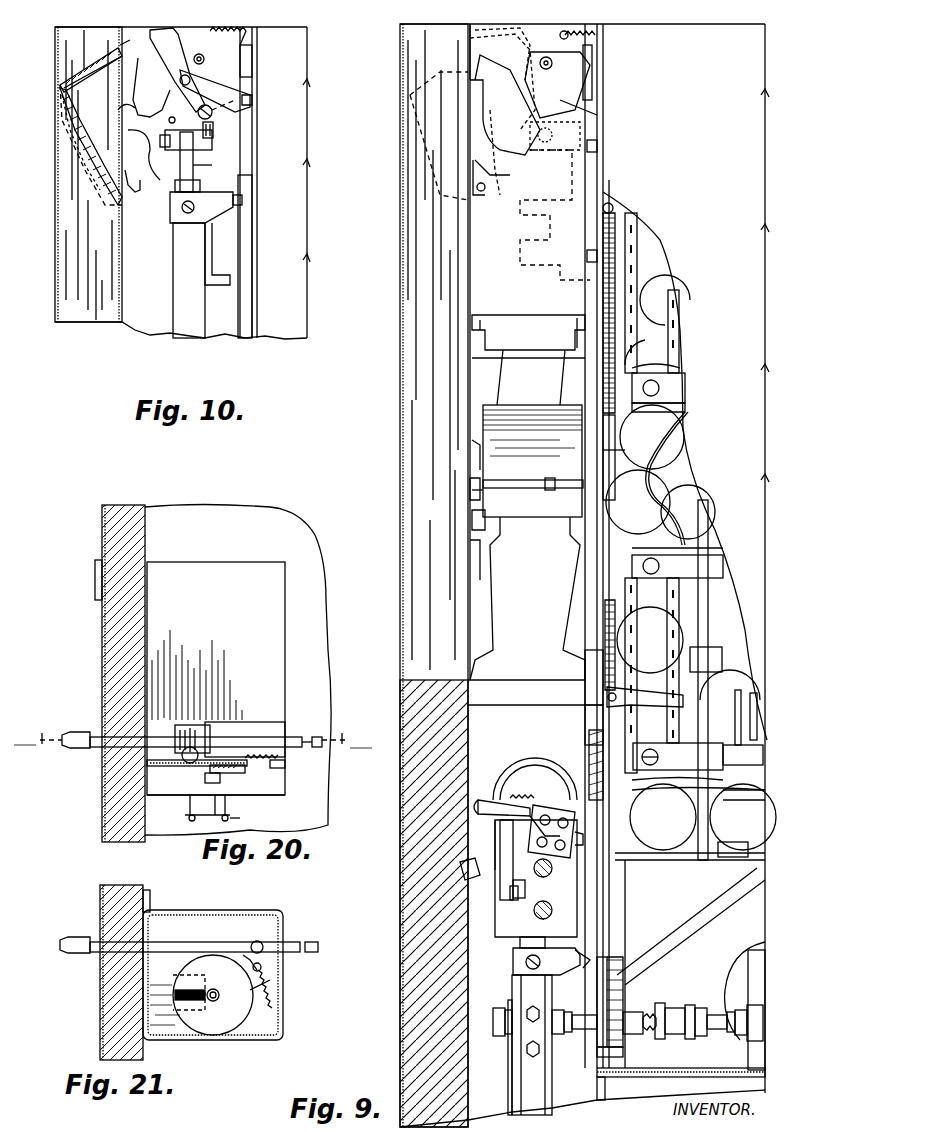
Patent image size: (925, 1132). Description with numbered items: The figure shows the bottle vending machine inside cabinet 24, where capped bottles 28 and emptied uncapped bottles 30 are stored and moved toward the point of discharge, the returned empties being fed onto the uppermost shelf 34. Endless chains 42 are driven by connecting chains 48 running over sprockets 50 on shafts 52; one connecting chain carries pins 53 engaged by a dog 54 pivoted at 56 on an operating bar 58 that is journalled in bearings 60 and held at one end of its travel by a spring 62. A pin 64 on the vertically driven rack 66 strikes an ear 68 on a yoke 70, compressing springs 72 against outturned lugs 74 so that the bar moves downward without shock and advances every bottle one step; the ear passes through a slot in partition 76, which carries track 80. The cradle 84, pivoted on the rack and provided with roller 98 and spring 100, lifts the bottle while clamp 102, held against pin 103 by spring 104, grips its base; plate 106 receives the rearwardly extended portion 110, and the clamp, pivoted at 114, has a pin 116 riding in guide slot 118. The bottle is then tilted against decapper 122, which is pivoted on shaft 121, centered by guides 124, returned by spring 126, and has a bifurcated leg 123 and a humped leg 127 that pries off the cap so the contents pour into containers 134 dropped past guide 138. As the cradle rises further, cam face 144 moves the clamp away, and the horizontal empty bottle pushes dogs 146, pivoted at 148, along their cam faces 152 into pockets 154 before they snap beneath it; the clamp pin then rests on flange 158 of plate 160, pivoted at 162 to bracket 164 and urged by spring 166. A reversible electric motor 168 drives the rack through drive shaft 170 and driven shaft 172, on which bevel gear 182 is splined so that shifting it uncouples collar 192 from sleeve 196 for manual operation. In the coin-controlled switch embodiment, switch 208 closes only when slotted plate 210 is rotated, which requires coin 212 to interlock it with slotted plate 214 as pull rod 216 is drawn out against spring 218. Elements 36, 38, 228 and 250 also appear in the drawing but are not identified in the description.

In FIG. 10, the cabinet 24 is at (55, 263).
In FIG. 20, the cabinet 24 is at (102, 658).
In FIG. 21, the cabinet 24 is at (100, 1012).
In FIG. 9, the cabinet 24 is at (766, 155).
In FIG. 9, the capped bottle 28 is at (515, 770).
In FIG. 9, the uncapped bottle 30 is at (468, 72).
In FIG. 9, the uppermost shelf 34 is at (723, 758).
In FIG. 9, the roller 36 is at (718, 820).
In FIG. 9, the brace 38 is at (640, 863).
In FIG. 9, the endless chains 42 is at (750, 790).
In FIG. 9, the connecting chains 48 is at (640, 252).
In FIG. 9, the sprockets 50 is at (672, 365).
In FIG. 9, the shafts 52 is at (678, 756).
In FIG. 9, the pins 53 is at (695, 630).
In FIG. 9, the dog 54 is at (600, 710).
In FIG. 9, the pivot 56 is at (603, 678).
In FIG. 9, the operating bar 58 is at (600, 744).
In FIG. 9, the bearings 60 is at (612, 450).
In FIG. 9, the spring 62 is at (617, 222).
In FIG. 10, the pin 64 is at (243, 203).
In FIG. 9, the pin 64 is at (575, 970).
In FIG. 10, the rack 66 is at (180, 282).
In FIG. 9, the rack 66 is at (520, 985).
In FIG. 9, the ear 68 is at (622, 985).
In FIG. 9, the yoke 70 is at (618, 1050).
In FIG. 9, the springs 72 is at (623, 992).
In FIG. 9, the outturned lugs 74 is at (612, 1068).
In FIG. 9, the partition 76 is at (610, 882).
In FIG. 10, the track 80 is at (245, 267).
In FIG. 9, the track 80 is at (592, 198).
In FIG. 10, the cradle 84 is at (140, 112).
In FIG. 9, the cradle 84 is at (460, 870).
In FIG. 10, the roller 98 is at (180, 170).
In FIG. 9, the roller 98 is at (525, 890).
In FIG. 10, the spring 100 is at (200, 155).
In FIG. 10, the clamp 102 is at (140, 48).
In FIG. 9, the clamp 102 is at (502, 82).
In FIG. 10, the pin 103 is at (120, 128).
In FIG. 9, the spring 104 is at (542, 822).
In FIG. 10, the plate 106 is at (150, 155).
In FIG. 9, the plate 106 is at (497, 838).
In FIG. 9, the rearwardly extended portion 110 is at (510, 890).
In FIG. 10, the pivot 114 is at (118, 56).
In FIG. 9, the pivot 114 is at (495, 816).
In FIG. 10, the pin 116 is at (213, 132).
In FIG. 9, the pin 116 is at (575, 838).
In FIG. 9, the guide slot 118 is at (557, 884).
In FIG. 9, the shaft 121 is at (535, 480).
In FIG. 9, the decapper 122 is at (532, 461).
In FIG. 9, the leg 123 is at (565, 525).
In FIG. 9, the guides 124 is at (558, 594).
In FIG. 9, the spring 126 is at (478, 490).
In FIG. 9, the leg 127 is at (552, 480).
In FIG. 9, the containers 134 is at (520, 330).
In FIG. 9, the guide 138 is at (506, 378).
In FIG. 10, the cam face 144 is at (160, 40).
In FIG. 9, the cam face 144 is at (502, 54).
In FIG. 9, the dogs 146 is at (483, 110).
In FIG. 10, the pivot 148 is at (140, 185).
In FIG. 9, the pivot 148 is at (493, 184).
In FIG. 10, the cam faces 152 is at (130, 130).
In FIG. 9, the cam faces 152 is at (498, 152).
In FIG. 10, the pockets 154 is at (81, 151).
In FIG. 9, the pockets 154 is at (468, 130).
In FIG. 10, the flange 158 is at (232, 113).
In FIG. 9, the flange 158 is at (555, 118).
In FIG. 10, the plate 160 is at (218, 92).
In FIG. 9, the plate 160 is at (558, 98).
In FIG. 10, the pivot 162 is at (206, 69).
In FIG. 9, the pivot 162 is at (557, 85).
In FIG. 10, the bracket 164 is at (238, 77).
In FIG. 9, the bracket 164 is at (578, 58).
In FIG. 10, the spring 166 is at (230, 36).
In FIG. 9, the spring 166 is at (590, 44).
In FIG. 9, the electric motor 168 is at (740, 970).
In FIG. 9, the drive shaft 170 is at (730, 1035).
In FIG. 9, the driven shaft 172 is at (495, 1038).
In FIG. 9, the bevel gear 182 is at (662, 1012).
In FIG. 9, the collar 192 is at (681, 1081).
In FIG. 9, the sleeve 196 is at (695, 1010).
In FIG. 20, the switch 208 is at (195, 810).
In FIG. 20, the slotted plate 210 is at (235, 770).
In FIG. 20, the coin 212 is at (180, 755).
In FIG. 21, the coin 212 is at (185, 988).
In FIG. 20, the slotted plate 214 is at (248, 735).
In FIG. 21, the slotted plate 214 is at (238, 1015).
In FIG. 20, the pull rod 216 is at (76, 738).
In FIG. 21, the pull rod 216 is at (70, 942).
In FIG. 20, the spring 218 is at (278, 770).
In FIG. 21, the spring 218 is at (275, 985).
In FIG. 9, the rod 228 is at (523, 1078).
In FIG. 10, the hook 250 is at (213, 262).